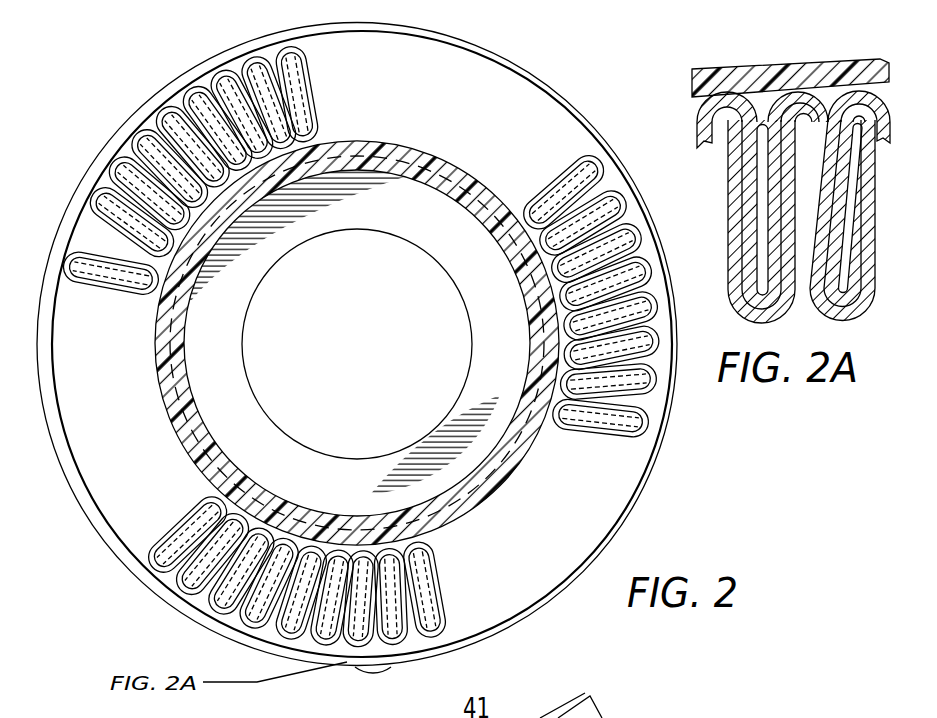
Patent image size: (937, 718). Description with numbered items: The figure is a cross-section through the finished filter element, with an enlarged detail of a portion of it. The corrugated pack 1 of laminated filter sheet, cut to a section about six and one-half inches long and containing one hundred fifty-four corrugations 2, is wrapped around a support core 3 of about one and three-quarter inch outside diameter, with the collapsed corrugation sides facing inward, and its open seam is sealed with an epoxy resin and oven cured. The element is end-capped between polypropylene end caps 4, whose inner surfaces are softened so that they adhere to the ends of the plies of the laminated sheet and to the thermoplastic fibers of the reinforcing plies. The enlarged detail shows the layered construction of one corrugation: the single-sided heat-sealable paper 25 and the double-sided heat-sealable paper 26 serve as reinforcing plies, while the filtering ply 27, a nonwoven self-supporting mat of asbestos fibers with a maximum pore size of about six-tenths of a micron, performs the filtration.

In FIG. 2, the pack 1 is at (133, 76).
In FIG. 2, the corrugations 2 is at (361, 345).
In FIG. 2A, the corrugations 2 is at (784, 207).
In FIG. 2, the support core 3 is at (530, 310).
In FIG. 2A, the support core 3 is at (708, 68).
In FIG. 2, the end caps 4 is at (647, 469).
In FIG. 2, the single-sided heat-sealable paper 25 is at (300, 72).
In FIG. 2A, the single-sided heat-sealable paper 25 is at (858, 186).
In FIG. 2, the double-sided heat-sealable paper 26 is at (117, 283).
In FIG. 2A, the double-sided heat-sealable paper 26 is at (842, 238).
In FIG. 2, the filtering ply 27 is at (608, 402).
In FIG. 2A, the filtering ply 27 is at (745, 240).